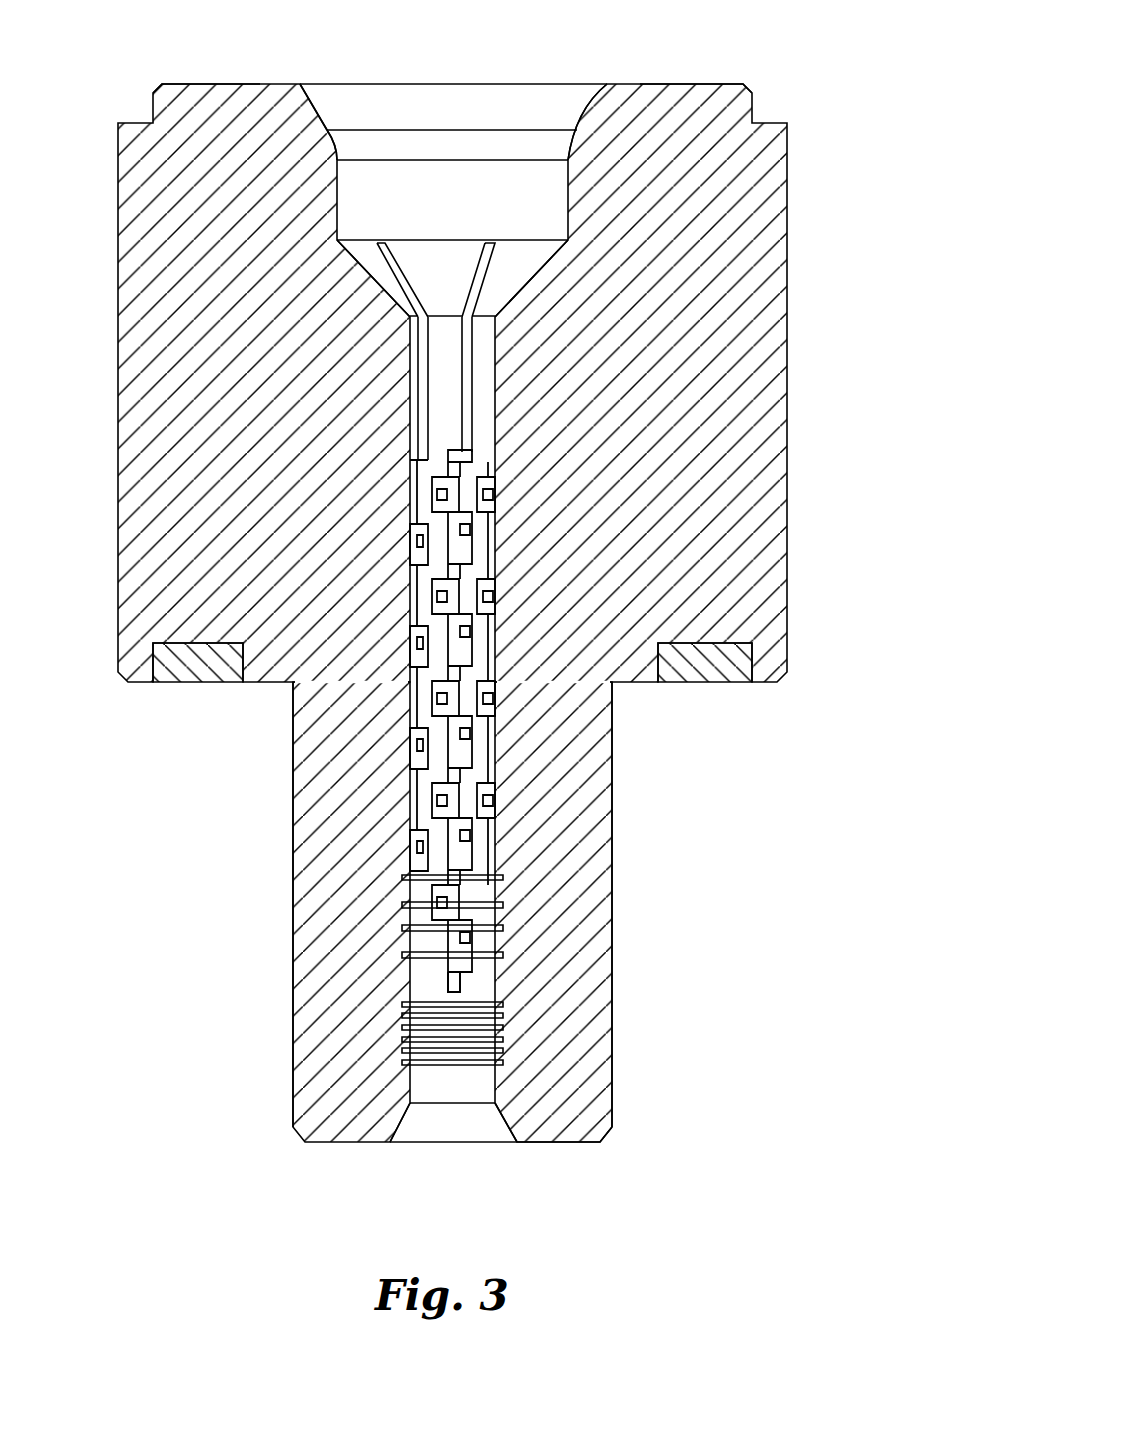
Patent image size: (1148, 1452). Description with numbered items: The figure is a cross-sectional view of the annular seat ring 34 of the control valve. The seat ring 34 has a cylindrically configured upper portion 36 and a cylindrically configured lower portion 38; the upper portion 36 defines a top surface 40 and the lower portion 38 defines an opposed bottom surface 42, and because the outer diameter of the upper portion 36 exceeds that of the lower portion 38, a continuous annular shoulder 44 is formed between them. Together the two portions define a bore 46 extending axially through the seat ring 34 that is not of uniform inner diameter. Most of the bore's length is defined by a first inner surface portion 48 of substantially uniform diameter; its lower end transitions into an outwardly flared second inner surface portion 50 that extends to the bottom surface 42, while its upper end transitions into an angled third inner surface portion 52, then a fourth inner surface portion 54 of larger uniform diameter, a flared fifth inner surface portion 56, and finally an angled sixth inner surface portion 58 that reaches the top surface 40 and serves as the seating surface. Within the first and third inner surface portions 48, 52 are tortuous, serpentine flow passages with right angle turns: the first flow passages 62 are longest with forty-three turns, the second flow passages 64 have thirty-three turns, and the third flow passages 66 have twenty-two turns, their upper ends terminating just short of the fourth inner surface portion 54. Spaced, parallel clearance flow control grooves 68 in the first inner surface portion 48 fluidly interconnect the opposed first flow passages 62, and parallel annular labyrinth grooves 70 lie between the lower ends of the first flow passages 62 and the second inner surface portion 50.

The seat ring 34 is at (803, 407).
The upper portion 36 is at (698, 103).
The lower portion 38 is at (585, 1033).
The top surface 40 is at (213, 84).
The bottom surface 42 is at (568, 1142).
The annular shoulder 44 is at (765, 686).
The bore 46 is at (527, 82).
The first inner surface portion 48 is at (485, 790).
The second inner surface portion 50 is at (397, 1118).
The third inner surface portion 52 is at (534, 284).
The fourth inner surface portion 54 is at (568, 204).
The fifth inner surface portion 56 is at (333, 142).
The sixth inner surface portion 58 is at (312, 102).
The first flow passages 62 is at (465, 985).
The second flow passages 64 is at (396, 780).
The third flow passages 66 is at (503, 675).
The flow control grooves 68 is at (402, 952).
The labyrinth grooves 70 is at (402, 1063).